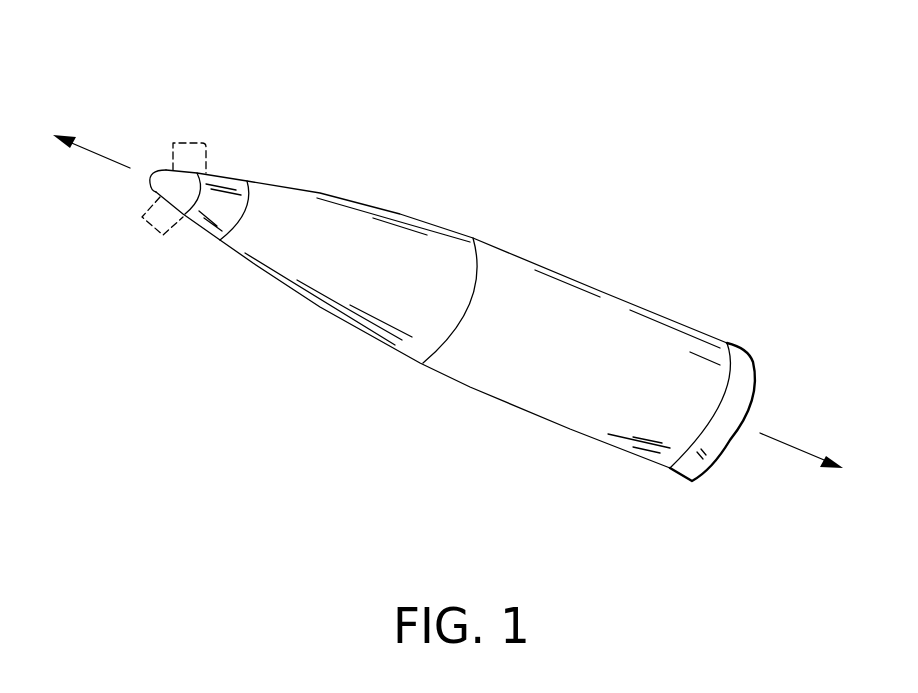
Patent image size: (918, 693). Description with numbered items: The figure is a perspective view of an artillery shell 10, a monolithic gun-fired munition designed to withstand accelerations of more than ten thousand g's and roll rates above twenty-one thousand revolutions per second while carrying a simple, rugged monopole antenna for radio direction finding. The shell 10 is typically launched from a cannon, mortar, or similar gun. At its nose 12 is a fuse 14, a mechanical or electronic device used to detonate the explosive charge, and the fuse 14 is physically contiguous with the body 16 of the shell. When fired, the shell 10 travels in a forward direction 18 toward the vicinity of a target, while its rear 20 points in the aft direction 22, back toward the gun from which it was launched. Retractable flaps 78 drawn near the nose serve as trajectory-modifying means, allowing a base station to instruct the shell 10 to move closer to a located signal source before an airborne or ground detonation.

The artillery shell 10 is at (441, 308).
The nose 12 is at (235, 151).
The fuse 14 is at (224, 163).
The body 16 is at (361, 315).
The forward direction 18 is at (91, 125).
The rear 20 is at (728, 382).
The aft direction 22 is at (818, 432).
The retractable flaps 78 is at (136, 154).